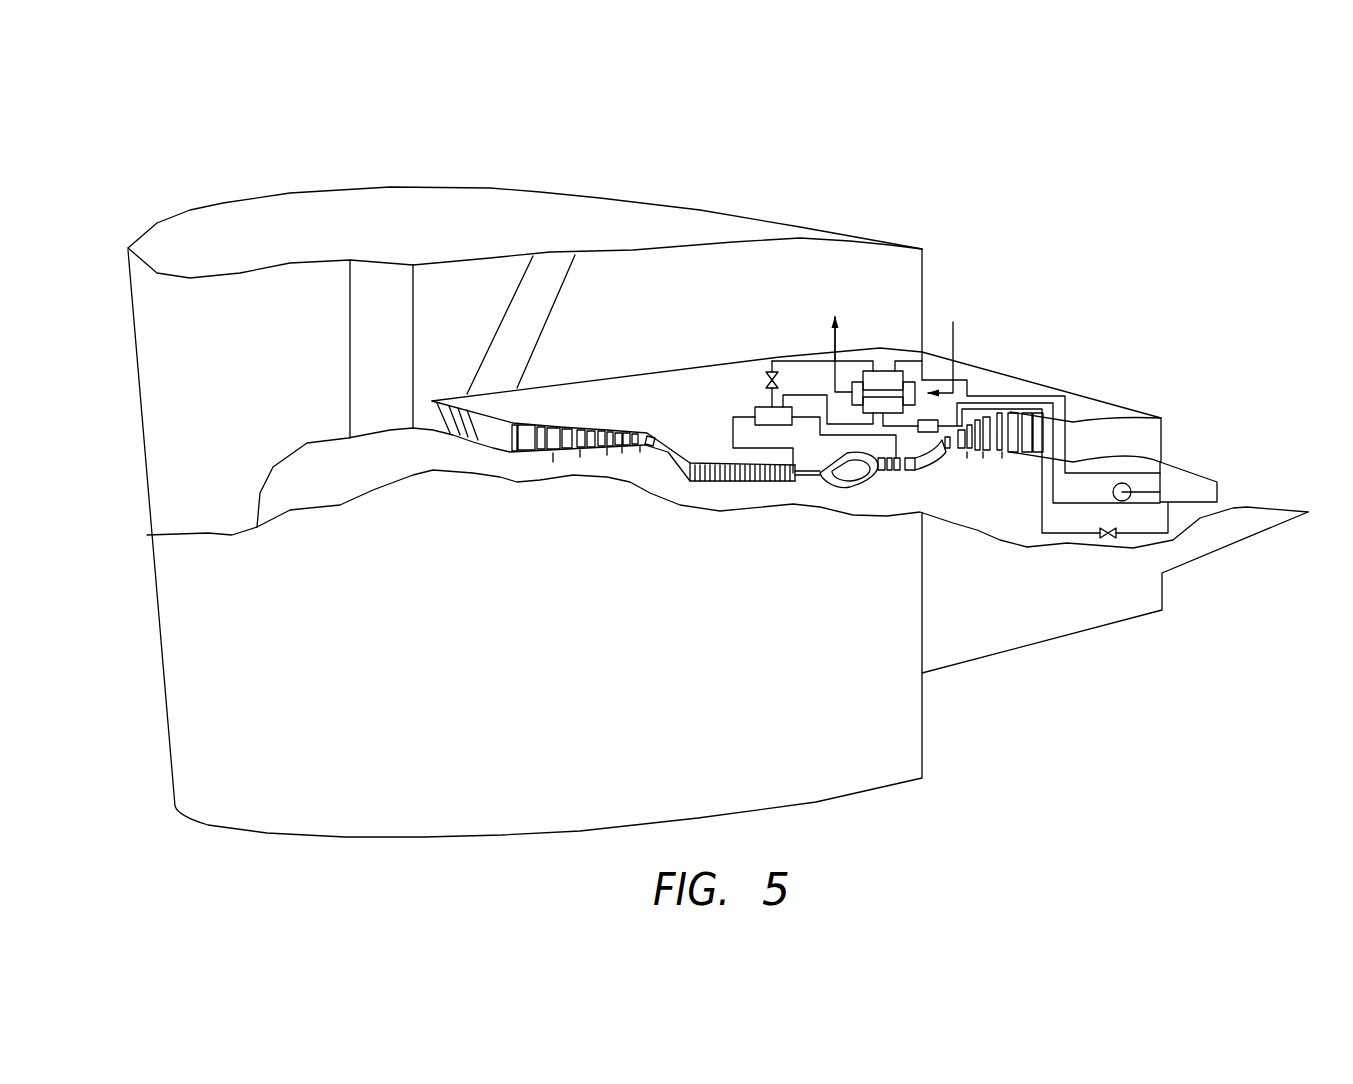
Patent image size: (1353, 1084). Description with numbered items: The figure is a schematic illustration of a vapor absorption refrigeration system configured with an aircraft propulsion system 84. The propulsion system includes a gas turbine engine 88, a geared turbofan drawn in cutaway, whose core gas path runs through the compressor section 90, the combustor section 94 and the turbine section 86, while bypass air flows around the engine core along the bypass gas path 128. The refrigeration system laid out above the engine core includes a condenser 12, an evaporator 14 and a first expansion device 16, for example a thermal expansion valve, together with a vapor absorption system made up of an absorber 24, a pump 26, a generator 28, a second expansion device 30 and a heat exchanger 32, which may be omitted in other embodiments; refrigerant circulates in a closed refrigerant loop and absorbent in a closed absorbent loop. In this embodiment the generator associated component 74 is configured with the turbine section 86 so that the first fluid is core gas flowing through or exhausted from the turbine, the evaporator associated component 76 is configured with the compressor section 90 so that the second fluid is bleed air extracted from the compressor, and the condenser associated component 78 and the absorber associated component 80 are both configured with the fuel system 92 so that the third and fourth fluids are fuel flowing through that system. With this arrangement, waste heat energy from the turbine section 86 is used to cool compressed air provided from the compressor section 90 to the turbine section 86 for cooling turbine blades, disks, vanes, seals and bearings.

The condenser 12 is at (887, 368).
The evaporator 14 is at (768, 417).
The first expansion device 16 is at (771, 374).
The absorber 24 is at (888, 410).
The pump 26 is at (1122, 483).
The generator 28 is at (1193, 480).
The second expansion device 30 is at (1107, 540).
The heat exchanger 32 is at (933, 433).
The generator associated component 74 is at (782, 537).
The turbine section 86 is at (1000, 480).
The evaporator associated component 76 is at (538, 505).
The compressor section 90 is at (787, 485).
The condenser associated component 78 is at (1030, 348).
The absorber associated component 80 is at (1030, 348).
The fuel system 92 is at (953, 337).
The aircraft propulsion system 84 is at (168, 163).
The gas turbine engine 88 is at (292, 368).
The combustor section 94 is at (848, 495).
The bypass gas path 128 is at (610, 345).